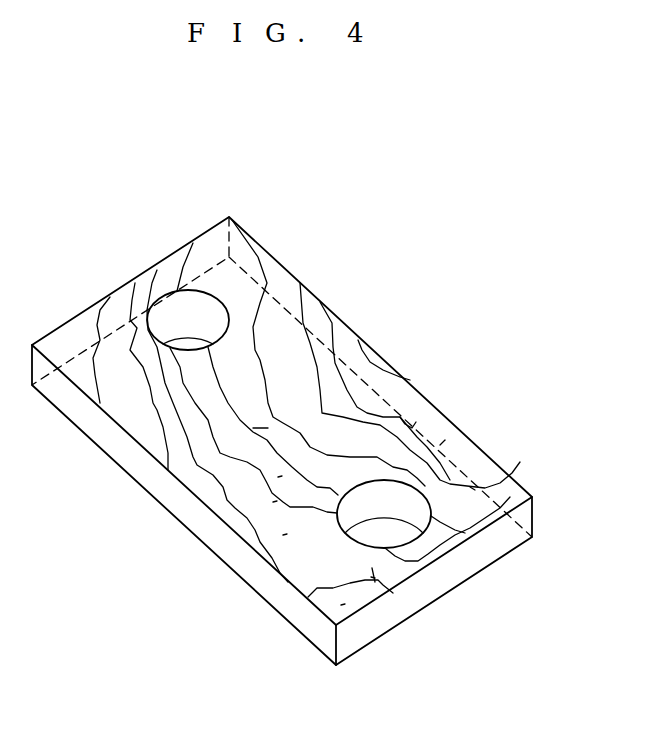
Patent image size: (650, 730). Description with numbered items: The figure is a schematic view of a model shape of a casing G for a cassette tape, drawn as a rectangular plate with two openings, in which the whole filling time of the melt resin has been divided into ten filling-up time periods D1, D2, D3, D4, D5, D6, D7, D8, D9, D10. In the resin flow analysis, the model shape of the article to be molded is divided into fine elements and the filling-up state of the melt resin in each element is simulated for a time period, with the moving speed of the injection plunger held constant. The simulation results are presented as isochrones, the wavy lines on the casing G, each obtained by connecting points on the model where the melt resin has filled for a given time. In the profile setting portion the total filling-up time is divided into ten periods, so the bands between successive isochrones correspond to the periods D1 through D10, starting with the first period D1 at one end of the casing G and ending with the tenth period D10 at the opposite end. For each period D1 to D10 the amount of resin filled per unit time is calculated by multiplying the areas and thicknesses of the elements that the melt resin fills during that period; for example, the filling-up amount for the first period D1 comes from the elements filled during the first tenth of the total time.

The substrate plate G is at (388, 360).
The first filling-up time period D1 is at (368, 352).
The second filling-up time period D2 is at (418, 403).
The third filling-up time period D3 is at (443, 437).
The fourth filling-up time period D4 is at (470, 485).
The fifth filling-up time period D5 is at (253, 428).
The sixth filling-up time period D6 is at (280, 477).
The seventh filling-up time period D7 is at (275, 502).
The eighth filling-up time period D8 is at (285, 535).
The ninth filling-up time period D9 is at (373, 577).
The tenth filling-up time period D10 is at (343, 605).